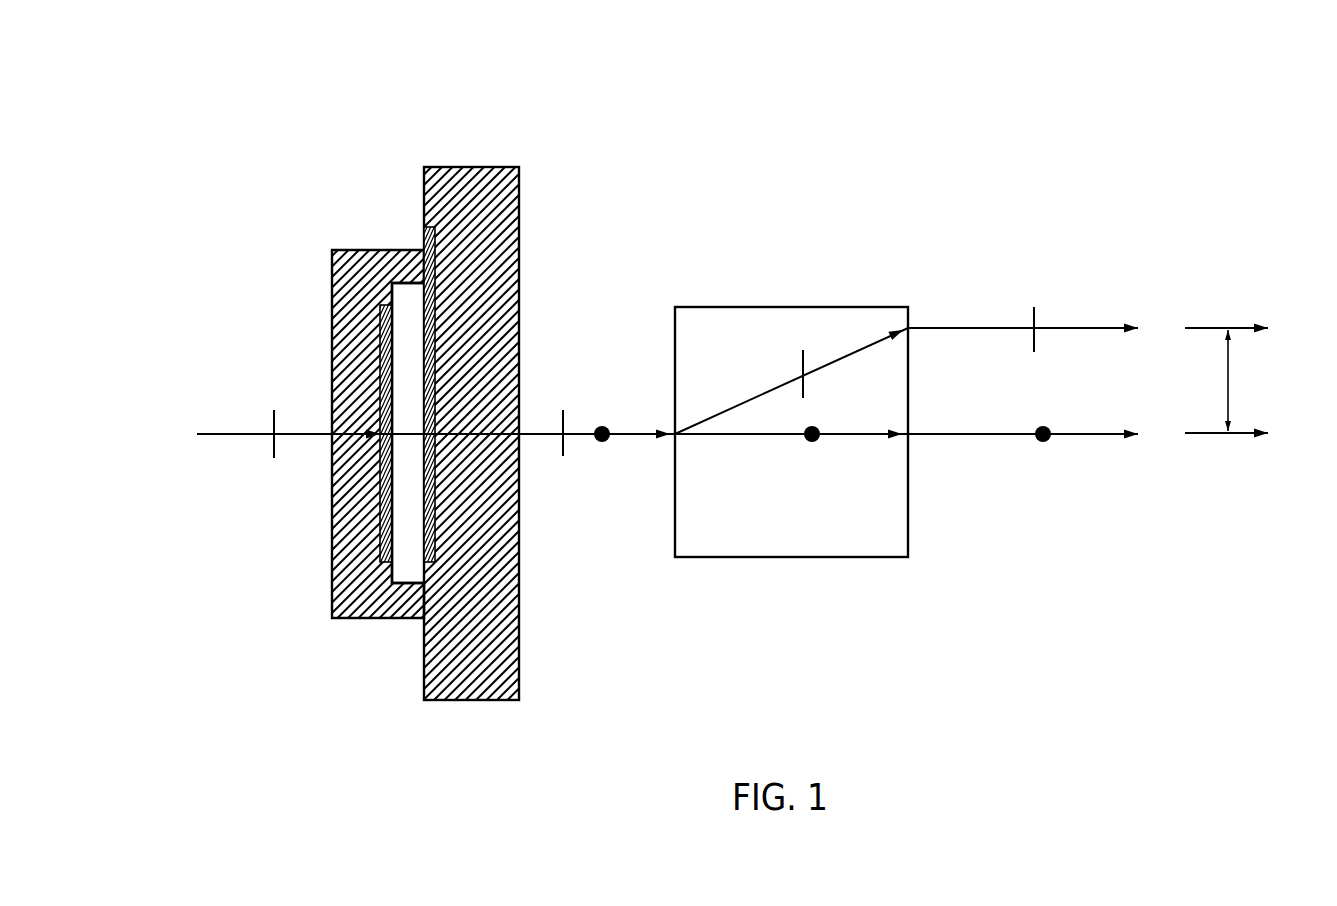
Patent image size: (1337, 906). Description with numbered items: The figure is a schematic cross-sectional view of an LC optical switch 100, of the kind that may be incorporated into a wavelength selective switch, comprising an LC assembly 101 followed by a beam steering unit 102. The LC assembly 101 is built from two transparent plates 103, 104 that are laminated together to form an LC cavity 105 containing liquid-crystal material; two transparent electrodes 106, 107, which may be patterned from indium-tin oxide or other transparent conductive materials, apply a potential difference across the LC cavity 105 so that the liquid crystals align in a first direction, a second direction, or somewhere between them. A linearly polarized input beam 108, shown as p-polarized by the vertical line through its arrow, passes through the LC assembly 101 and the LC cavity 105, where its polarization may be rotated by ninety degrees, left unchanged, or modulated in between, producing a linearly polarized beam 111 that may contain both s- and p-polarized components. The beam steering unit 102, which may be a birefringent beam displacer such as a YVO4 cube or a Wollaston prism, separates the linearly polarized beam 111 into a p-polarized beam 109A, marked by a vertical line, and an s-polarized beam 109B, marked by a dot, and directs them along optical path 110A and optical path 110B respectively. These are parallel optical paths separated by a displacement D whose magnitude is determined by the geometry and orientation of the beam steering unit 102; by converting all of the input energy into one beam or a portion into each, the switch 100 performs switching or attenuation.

The LC optical switch 100 is at (1026, 149).
The LC assembly 101 is at (461, 127).
The beam steering unit 102 is at (724, 307).
The transparent plate 103 is at (333, 333).
The transparent plate 104 is at (519, 238).
The LC cavity 105 is at (407, 297).
The transparent electrode 106 is at (380, 566).
The transparent electrode 107 is at (424, 237).
The input beam 108 is at (240, 434).
The polarized beam 109A is at (842, 352).
The polarized beam 109B is at (850, 440).
The optical path 110A is at (1208, 328).
The optical path 110B is at (1208, 433).
The linearly polarized beam 111 is at (630, 433).
The displacement D is at (1228, 375).